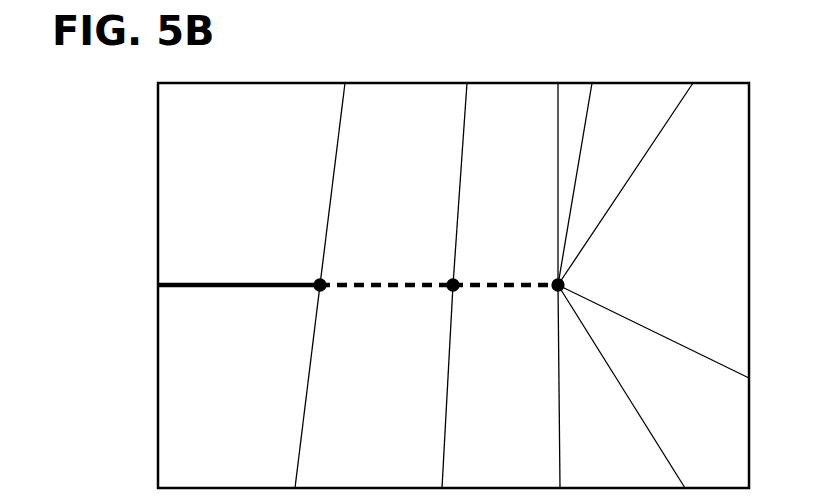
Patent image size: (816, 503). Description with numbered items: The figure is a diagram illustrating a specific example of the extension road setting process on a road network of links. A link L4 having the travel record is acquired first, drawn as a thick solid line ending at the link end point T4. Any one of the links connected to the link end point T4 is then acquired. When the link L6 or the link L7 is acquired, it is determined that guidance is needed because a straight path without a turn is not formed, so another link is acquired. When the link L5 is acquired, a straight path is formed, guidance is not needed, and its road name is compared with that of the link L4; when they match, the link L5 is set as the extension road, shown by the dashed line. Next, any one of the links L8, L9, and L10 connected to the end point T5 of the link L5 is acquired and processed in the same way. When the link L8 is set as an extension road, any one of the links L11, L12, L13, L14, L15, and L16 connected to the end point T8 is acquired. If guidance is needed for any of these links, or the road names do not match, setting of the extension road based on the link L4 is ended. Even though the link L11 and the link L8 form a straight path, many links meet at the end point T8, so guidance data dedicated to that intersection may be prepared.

The link L4 is at (232, 278).
The link L5 is at (397, 282).
The link L6 is at (340, 142).
The link L7 is at (316, 352).
The link L8 is at (495, 282).
The link L9 is at (464, 163).
The link L10 is at (450, 357).
The link L11 is at (630, 318).
The link L12 is at (556, 124).
The link L13 is at (585, 140).
The link L14 is at (635, 174).
The link L15 is at (643, 368).
The link L16 is at (583, 396).
The link end point T4 is at (318, 293).
The end point T5 is at (449, 291).
The end point T8 is at (567, 283).